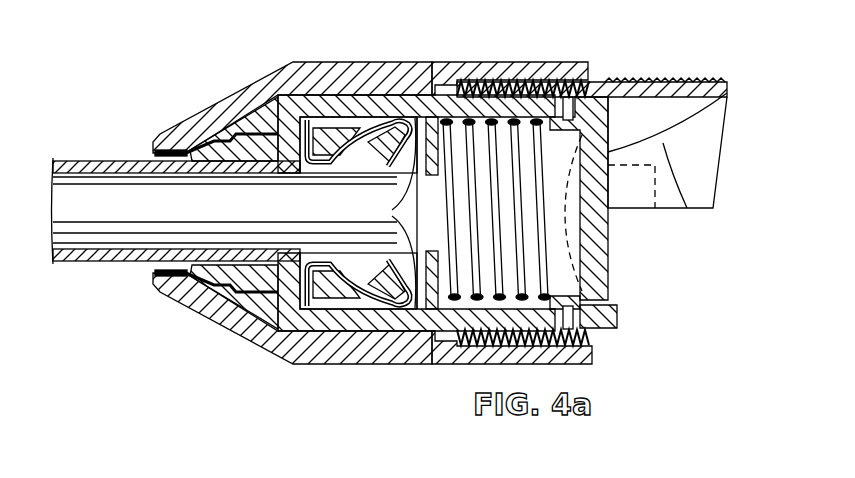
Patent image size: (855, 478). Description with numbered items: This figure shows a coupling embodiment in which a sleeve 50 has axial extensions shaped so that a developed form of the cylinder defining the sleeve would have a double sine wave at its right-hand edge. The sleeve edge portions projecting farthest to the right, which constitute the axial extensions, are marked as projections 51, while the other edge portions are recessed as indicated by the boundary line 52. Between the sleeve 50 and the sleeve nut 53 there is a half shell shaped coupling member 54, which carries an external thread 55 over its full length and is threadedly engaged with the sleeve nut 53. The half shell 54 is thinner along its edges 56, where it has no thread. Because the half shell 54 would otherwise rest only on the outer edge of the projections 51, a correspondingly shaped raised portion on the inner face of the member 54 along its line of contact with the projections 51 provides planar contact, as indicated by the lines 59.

The sleeve 50 is at (413, 318).
The axial extensions 51 is at (612, 317).
The boundary line 52 is at (613, 252).
The sleeve nut 53 is at (440, 63).
The half shell shaped coupling member 54 is at (655, 80).
The external thread 55 is at (606, 80).
The edges 56 is at (655, 192).
The lines 59 is at (687, 208).